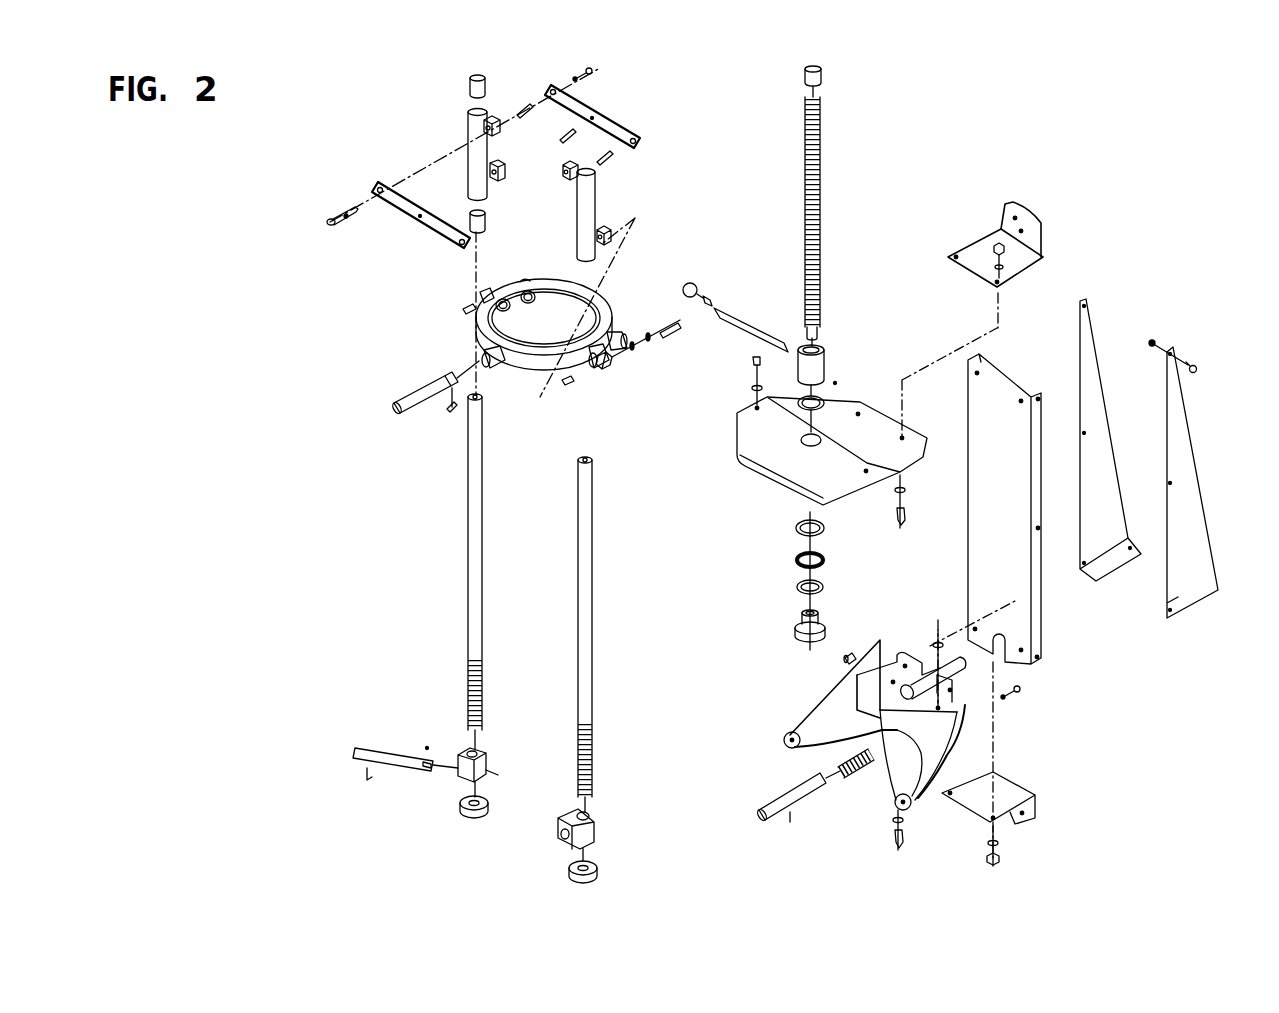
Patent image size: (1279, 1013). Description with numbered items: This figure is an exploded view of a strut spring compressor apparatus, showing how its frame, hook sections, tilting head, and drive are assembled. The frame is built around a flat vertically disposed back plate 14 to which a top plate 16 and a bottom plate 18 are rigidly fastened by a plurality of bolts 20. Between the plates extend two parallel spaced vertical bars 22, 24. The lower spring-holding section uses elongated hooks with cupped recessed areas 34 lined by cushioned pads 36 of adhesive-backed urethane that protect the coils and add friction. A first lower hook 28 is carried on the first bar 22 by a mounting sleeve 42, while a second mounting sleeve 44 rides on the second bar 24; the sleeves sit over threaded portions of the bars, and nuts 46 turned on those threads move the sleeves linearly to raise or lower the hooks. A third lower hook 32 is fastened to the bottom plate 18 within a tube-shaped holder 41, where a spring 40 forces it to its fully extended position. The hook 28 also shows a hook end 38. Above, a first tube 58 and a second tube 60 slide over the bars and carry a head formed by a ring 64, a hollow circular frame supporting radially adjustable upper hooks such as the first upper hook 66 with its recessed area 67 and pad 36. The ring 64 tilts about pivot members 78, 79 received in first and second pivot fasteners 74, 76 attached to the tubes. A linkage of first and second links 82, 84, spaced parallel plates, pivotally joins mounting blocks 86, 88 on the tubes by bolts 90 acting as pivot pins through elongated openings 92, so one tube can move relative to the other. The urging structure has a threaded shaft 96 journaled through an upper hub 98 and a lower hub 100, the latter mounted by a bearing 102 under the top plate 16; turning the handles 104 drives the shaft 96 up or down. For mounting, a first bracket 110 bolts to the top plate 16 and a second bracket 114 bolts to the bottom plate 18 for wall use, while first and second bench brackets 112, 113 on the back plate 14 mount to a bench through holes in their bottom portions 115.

The back plate 14 is at (998, 393).
The top plate 16 is at (748, 442).
The bottom plate 18 is at (840, 703).
The bolts 20 is at (849, 655).
The first parallel bar 22 is at (470, 548).
The second parallel bar 24 is at (580, 588).
The first lower hook 28 is at (372, 750).
The third lower hook 32 is at (795, 796).
The recessed areas 34 is at (429, 762).
The cushioned pad 36 is at (449, 410).
The hook 38 is at (368, 780).
The spring 40 is at (860, 766).
The tube-shaped holder 41 is at (964, 662).
The first mounting sleeve 42 is at (474, 766).
The second mounting sleeve 44 is at (594, 834).
The nuts 46 is at (489, 803).
The first tube 58 is at (472, 130).
The second tube 60 is at (592, 210).
The ring 64 is at (550, 372).
The first upper hook 66 is at (430, 386).
The recessed areas 67 is at (454, 395).
The first pivot fastener 74 is at (500, 165).
The second pivot fastener 76 is at (611, 242).
The pivot member 78 is at (487, 290).
The pivot member 79 is at (601, 368).
The first link 82 is at (410, 210).
The second link 84 is at (597, 118).
The mounting block 86 is at (491, 118).
The mounting block 88 is at (565, 172).
The bolts 90 is at (332, 217).
The openings 92 is at (579, 78).
The threaded shaft 96 is at (820, 132).
The upper hub 98 is at (820, 362).
The lower hub 100 is at (800, 616).
The bearing 102 is at (782, 532).
The handles 104 is at (746, 314).
The first bracket 110 is at (1022, 232).
The first bench bracket 112 is at (1088, 332).
The second bench bracket 113 is at (1182, 426).
The second bracket 114 is at (1012, 792).
The bottom portion 115 is at (1092, 580).